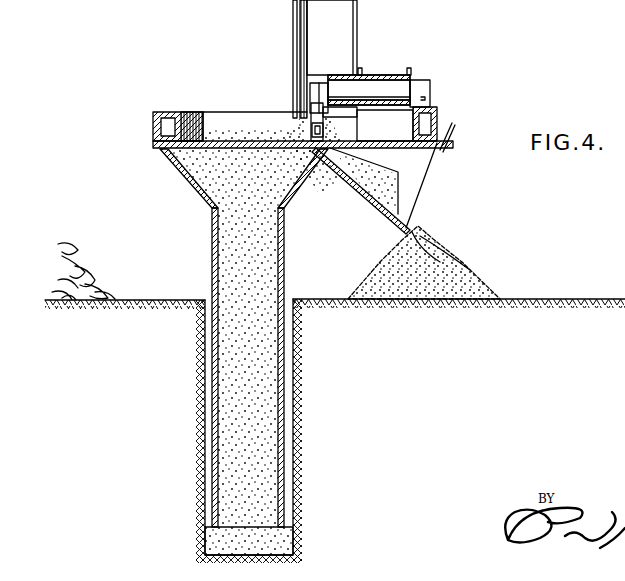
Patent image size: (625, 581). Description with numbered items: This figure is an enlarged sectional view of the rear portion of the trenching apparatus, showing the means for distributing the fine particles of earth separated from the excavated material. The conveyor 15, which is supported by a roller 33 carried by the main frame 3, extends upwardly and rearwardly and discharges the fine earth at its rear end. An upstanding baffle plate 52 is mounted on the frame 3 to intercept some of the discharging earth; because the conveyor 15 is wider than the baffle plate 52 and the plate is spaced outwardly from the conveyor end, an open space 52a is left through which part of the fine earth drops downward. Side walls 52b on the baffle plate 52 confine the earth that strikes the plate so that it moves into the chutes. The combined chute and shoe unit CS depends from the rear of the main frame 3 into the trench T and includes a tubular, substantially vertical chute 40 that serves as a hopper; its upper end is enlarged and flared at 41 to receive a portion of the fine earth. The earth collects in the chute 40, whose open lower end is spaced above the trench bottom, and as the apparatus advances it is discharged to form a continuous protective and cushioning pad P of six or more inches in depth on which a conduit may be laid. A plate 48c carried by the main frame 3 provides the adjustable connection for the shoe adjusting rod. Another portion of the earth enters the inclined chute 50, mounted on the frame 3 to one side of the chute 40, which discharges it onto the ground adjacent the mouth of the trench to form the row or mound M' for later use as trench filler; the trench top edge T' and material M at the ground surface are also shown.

The main frame 3 is at (436, 106).
The conveyor 15 is at (372, 74).
The roller 33 is at (395, 82).
The tubular chute 40 is at (284, 266).
The flared upper end 41 is at (188, 178).
The plate 48c is at (203, 112).
The chute 50 is at (366, 196).
The baffle plate 52 is at (312, 42).
The open space 52a is at (291, 119).
The side walls 52b is at (300, 17).
The combined chute and shoe unit CS is at (211, 208).
The trench T is at (239, 416).
The trench top T' is at (461, 9).
The pad P is at (291, 545).
The material bush M is at (83, 261).
The mound M' is at (424, 259).